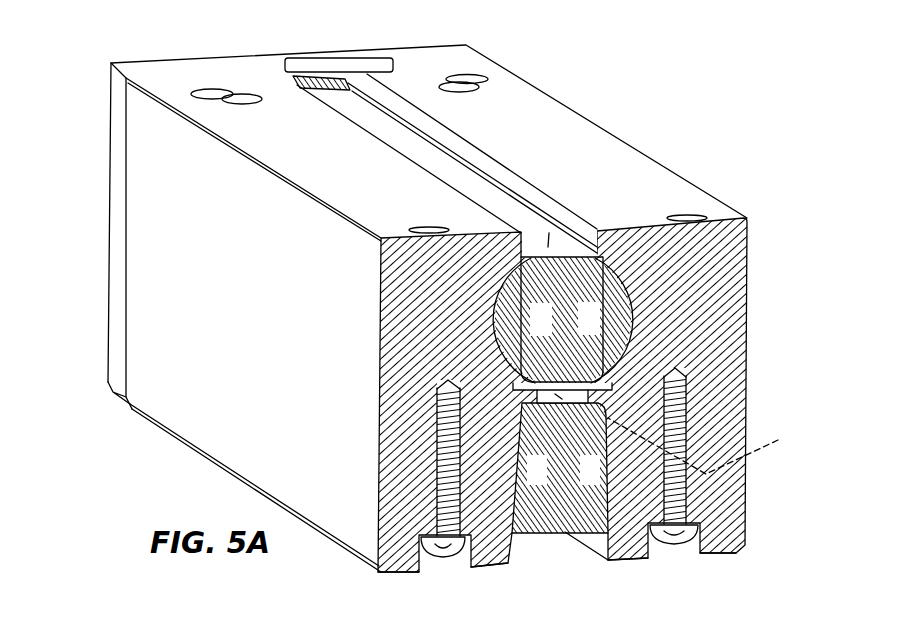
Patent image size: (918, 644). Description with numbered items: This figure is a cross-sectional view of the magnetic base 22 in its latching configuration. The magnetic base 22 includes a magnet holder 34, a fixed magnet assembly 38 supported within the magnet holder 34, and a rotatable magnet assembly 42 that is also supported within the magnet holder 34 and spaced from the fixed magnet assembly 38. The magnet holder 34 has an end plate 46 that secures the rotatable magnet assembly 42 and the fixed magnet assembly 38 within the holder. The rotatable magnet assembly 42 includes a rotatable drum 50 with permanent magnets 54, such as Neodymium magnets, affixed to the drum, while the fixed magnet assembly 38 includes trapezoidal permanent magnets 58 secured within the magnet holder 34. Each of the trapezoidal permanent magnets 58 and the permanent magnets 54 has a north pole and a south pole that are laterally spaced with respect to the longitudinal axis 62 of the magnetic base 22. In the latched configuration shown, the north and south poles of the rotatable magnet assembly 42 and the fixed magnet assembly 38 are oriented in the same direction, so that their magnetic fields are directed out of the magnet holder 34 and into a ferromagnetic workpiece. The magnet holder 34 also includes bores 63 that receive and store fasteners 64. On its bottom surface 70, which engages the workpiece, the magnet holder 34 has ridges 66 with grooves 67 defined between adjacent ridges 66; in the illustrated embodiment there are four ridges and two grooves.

The magnetic base 22 is at (76, 84).
The magnet holder 34 is at (170, 315).
The fixed magnet assembly 38 is at (636, 412).
The rotatable magnet assembly 42 is at (680, 311).
The end plate 46 is at (115, 263).
The rotatable drum 50 is at (633, 298).
The permanent magnets 54 is at (476, 192).
The trapezoidal permanent magnets 58 is at (549, 513).
The longitudinal axis 62 is at (704, 446).
The bores 63 is at (443, 394).
The fasteners 64 is at (439, 488).
The ridges 66 is at (403, 572).
The grooves 67 is at (463, 557).
The bottom surface 70 is at (165, 433).